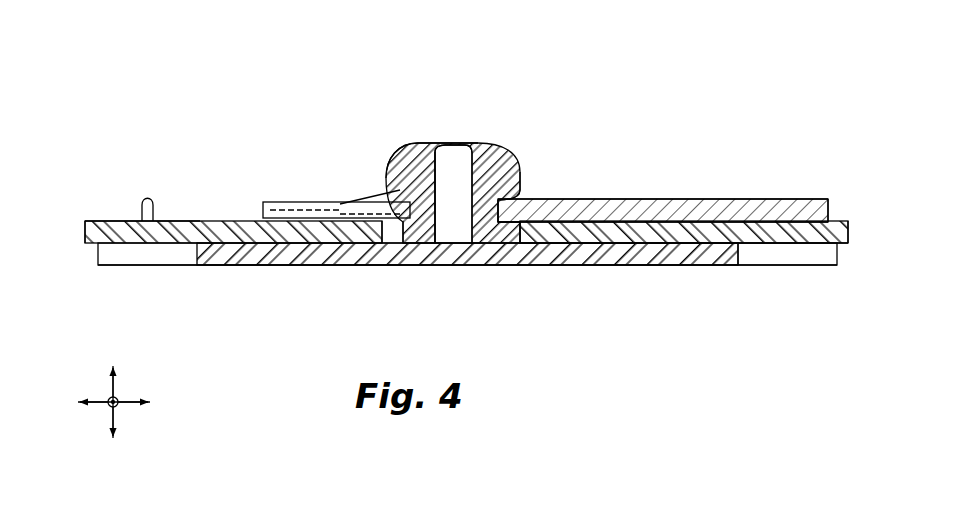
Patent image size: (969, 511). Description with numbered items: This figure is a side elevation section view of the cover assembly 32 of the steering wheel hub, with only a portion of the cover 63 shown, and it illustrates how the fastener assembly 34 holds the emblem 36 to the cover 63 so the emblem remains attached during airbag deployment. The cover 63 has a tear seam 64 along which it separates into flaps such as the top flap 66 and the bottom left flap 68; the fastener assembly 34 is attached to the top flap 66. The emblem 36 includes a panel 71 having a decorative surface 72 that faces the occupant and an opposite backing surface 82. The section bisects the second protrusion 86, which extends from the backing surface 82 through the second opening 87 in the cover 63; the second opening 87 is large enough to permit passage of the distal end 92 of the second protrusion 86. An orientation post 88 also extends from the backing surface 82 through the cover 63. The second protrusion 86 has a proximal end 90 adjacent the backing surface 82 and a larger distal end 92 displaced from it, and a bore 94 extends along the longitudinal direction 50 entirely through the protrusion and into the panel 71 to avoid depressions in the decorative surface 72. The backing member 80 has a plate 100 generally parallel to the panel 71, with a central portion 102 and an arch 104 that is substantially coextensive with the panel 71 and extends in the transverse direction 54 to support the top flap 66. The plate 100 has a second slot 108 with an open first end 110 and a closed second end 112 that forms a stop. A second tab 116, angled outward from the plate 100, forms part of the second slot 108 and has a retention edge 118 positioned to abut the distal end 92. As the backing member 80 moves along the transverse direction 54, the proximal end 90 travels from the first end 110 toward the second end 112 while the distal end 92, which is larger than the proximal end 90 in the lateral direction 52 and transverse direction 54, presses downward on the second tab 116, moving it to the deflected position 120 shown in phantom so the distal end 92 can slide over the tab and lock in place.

The cover assembly 32 is at (625, 79).
The fastener assembly 34 is at (545, 150).
The emblem 36 is at (595, 270).
The longitudinal direction 50 is at (112, 392).
The lateral direction 52 is at (118, 406).
The transverse direction 54 is at (128, 400).
The cover 63 is at (207, 219).
The tear seam 64 is at (123, 232).
The top flap 66 is at (713, 230).
The bottom left flap 68 is at (96, 222).
The panel 71 is at (222, 285).
The decorative surface 72 is at (672, 265).
The backing member 80 is at (308, 187).
The backing surface 82 is at (652, 233).
The second protrusion 86 is at (482, 140).
The second opening 87 is at (500, 225).
The orientation post 88 is at (148, 210).
The proximal end 90 is at (498, 243).
The distal end 92 is at (512, 173).
The bore 94 is at (423, 162).
The plate 100 is at (590, 190).
The central portion 102 is at (655, 207).
The arch 104 is at (790, 205).
The second slot 108 is at (390, 226).
The first end 110 is at (378, 200).
The second end 112 is at (453, 207).
The second tab 116 is at (347, 188).
The retention edge 118 is at (403, 140).
The deflected position 120 is at (333, 200).